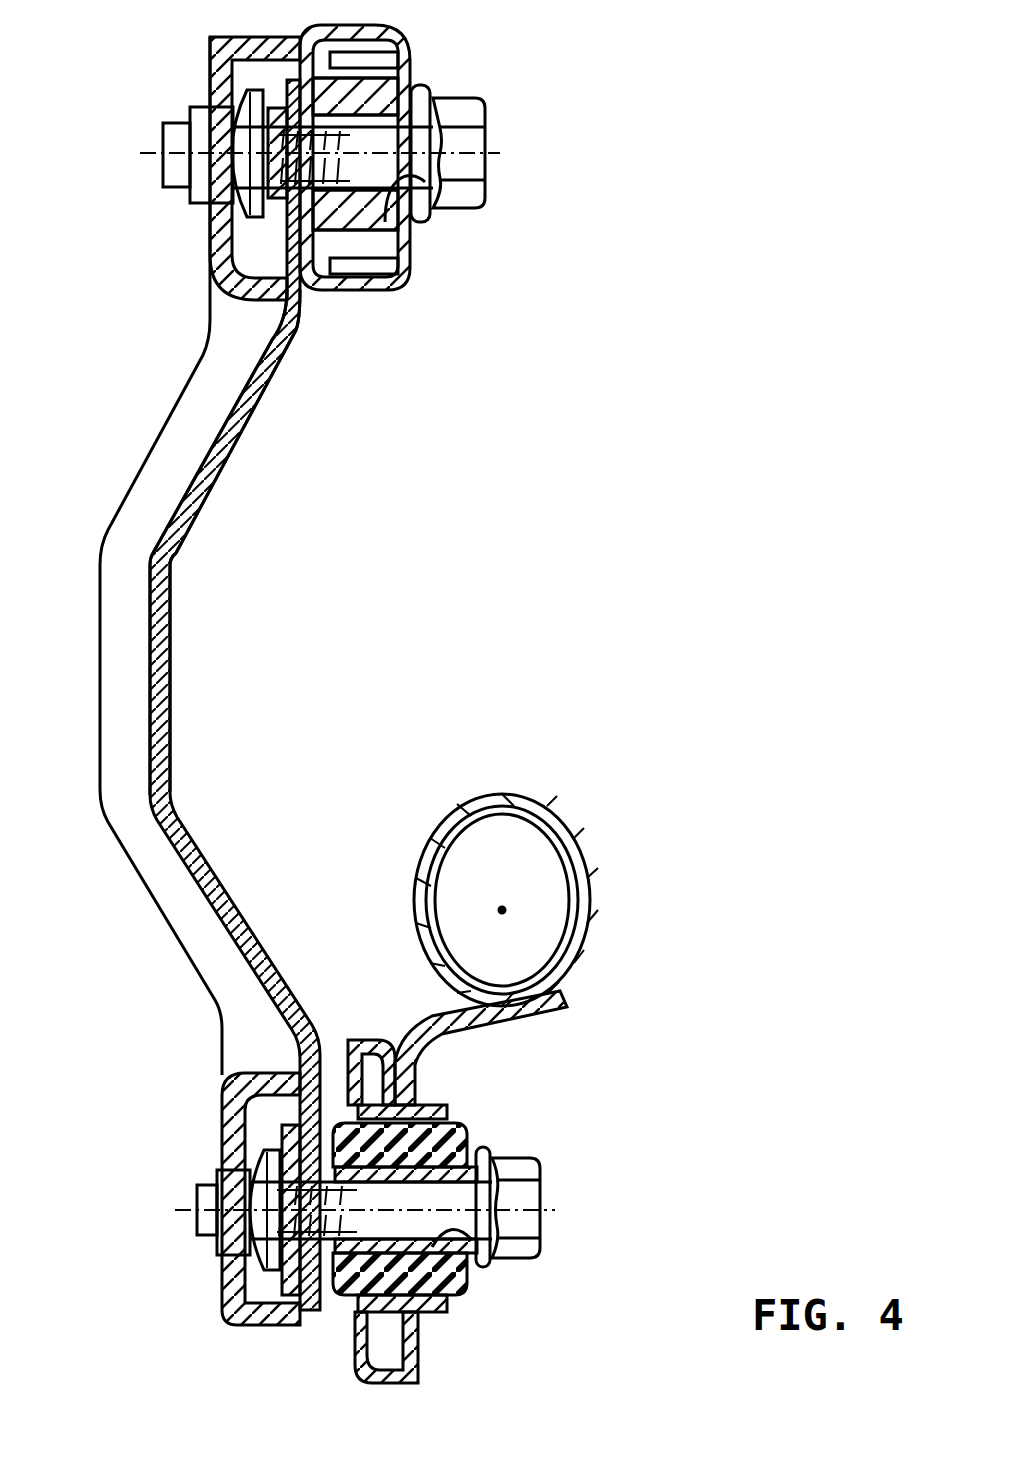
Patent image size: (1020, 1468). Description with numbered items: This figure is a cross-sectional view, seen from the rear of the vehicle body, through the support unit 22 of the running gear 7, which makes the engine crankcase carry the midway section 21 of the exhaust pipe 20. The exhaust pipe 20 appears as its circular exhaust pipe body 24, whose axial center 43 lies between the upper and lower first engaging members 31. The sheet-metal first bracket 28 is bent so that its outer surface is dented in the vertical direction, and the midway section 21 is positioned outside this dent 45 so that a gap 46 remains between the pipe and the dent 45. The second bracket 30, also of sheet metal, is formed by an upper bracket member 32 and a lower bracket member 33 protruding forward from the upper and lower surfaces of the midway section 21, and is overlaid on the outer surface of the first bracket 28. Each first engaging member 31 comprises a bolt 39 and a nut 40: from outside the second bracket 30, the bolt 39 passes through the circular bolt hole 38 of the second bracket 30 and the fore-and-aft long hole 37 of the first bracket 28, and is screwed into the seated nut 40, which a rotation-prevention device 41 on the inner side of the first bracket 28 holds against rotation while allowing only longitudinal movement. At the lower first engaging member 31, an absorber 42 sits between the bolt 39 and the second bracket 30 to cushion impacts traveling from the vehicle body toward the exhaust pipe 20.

The running gear 7 is at (562, 378).
The exhaust pipe 20 is at (464, 796).
The midway section 21 is at (526, 795).
The support unit 22 is at (355, 468).
The exhaust pipe body 24 is at (502, 900).
The first bracket 28 is at (187, 536).
The second bracket 30 is at (414, 48).
The first engaging members 31 is at (495, 140).
The bracket member 32 is at (411, 70).
The bracket member 33 is at (420, 1060).
The long hole 37 is at (234, 114).
The bolt hole 38 is at (418, 206).
The bolt 39 is at (428, 178).
The nut 40 is at (215, 172).
The rotation-prevention device 41 is at (210, 255).
The absorber 42 is at (470, 1290).
The axial center 43 is at (503, 910).
The dent 45 is at (170, 652).
The gap 46 is at (340, 933).